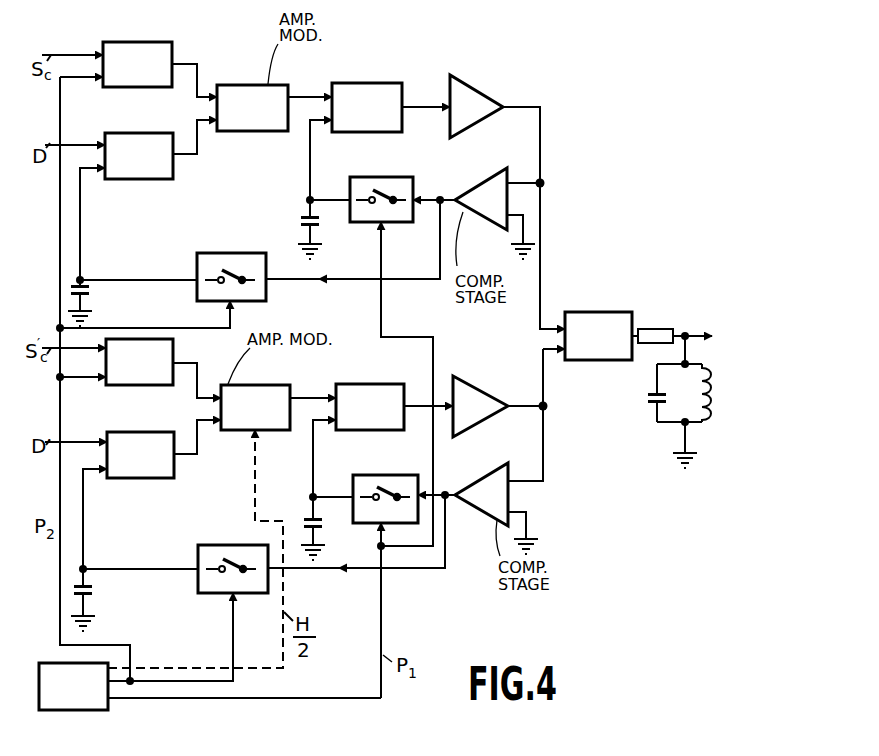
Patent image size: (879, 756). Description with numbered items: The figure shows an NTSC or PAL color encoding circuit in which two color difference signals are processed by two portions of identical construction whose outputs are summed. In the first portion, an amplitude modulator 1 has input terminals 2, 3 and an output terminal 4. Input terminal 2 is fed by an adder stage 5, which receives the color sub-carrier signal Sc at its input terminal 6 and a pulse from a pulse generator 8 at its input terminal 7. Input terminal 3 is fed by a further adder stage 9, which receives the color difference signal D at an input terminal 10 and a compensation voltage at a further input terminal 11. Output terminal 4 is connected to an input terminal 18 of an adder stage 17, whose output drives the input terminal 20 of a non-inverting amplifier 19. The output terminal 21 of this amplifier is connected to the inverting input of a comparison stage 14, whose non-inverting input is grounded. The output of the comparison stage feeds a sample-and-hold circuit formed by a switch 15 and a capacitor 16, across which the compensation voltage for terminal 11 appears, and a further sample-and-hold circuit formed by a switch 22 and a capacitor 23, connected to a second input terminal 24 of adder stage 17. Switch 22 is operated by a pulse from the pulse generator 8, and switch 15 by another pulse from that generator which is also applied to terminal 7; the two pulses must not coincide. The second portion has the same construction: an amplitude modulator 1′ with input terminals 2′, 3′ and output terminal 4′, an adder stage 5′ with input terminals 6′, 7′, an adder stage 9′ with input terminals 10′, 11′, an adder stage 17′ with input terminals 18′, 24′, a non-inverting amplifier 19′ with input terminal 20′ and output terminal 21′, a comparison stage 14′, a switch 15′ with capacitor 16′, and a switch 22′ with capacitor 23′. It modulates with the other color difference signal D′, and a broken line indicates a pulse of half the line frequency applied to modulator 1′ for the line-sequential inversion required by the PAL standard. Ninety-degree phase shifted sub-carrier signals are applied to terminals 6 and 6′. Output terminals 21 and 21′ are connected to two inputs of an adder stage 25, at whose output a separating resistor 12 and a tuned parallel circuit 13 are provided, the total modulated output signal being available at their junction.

The amplitude modulator 1 is at (239, 86).
The input terminal 2 is at (216, 95).
The input terminal 3 is at (215, 125).
The output terminal 4 is at (298, 93).
The adder stage 5 is at (163, 87).
The input terminal 6 is at (100, 54).
The input terminal 7 is at (100, 80).
The pulse generator 8 is at (60, 663).
The adder stage 9 is at (162, 179).
The input terminal 10 is at (101, 144).
The input terminal 11 is at (102, 172).
The separating resistor 12 is at (645, 329).
The parallel circuit 13 is at (704, 392).
The comparison stage 14 is at (482, 212).
The switch 15 is at (267, 284).
The capacitor 16 is at (91, 294).
The adder stage 17 is at (358, 84).
The input terminal 18 is at (330, 95).
The non-inverting amplifier 19 is at (482, 122).
The input terminal 20 is at (447, 117).
The output terminal 21 is at (543, 186).
The switch 22 is at (396, 177).
The capacitor 23 is at (322, 232).
The second input terminal 24 is at (332, 127).
The adder stage 25 is at (597, 312).
The amplitude modulator 1′ is at (240, 385).
The input terminal 2′ is at (217, 395).
The input terminal 3′ is at (216, 427).
The output terminal 4′ is at (298, 393).
The adder stage 5′ is at (163, 385).
The input terminal 6′ is at (101, 354).
The input terminal 7′ is at (100, 381).
The adder stage 9′ is at (163, 478).
The input terminal 10′ is at (103, 442).
The input terminal 11′ is at (103, 474).
The comparison stage 14′ is at (472, 510).
The switch 15′ is at (256, 596).
The capacitor 16′ is at (93, 594).
The adder stage 17′ is at (360, 384).
The input terminal 18′ is at (334, 395).
The non-inverting amplifier 19′ is at (488, 428).
The input terminal 20′ is at (448, 420).
The output terminal 21′ is at (545, 406).
The switch 22′ is at (364, 479).
The capacitor 23′ is at (321, 532).
The second input terminal 24′ is at (334, 430).